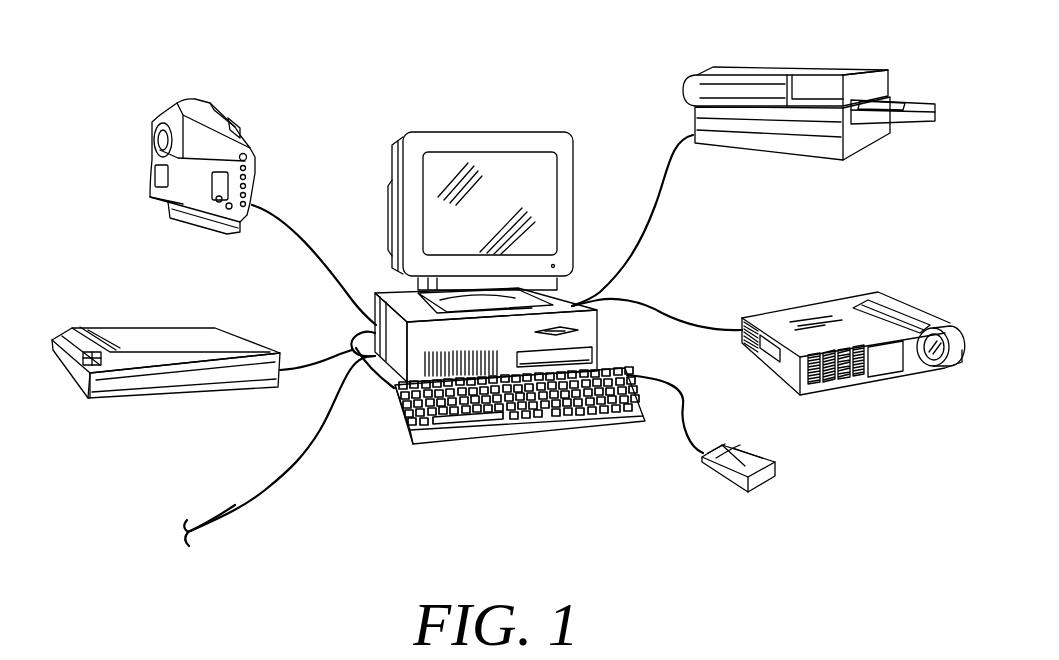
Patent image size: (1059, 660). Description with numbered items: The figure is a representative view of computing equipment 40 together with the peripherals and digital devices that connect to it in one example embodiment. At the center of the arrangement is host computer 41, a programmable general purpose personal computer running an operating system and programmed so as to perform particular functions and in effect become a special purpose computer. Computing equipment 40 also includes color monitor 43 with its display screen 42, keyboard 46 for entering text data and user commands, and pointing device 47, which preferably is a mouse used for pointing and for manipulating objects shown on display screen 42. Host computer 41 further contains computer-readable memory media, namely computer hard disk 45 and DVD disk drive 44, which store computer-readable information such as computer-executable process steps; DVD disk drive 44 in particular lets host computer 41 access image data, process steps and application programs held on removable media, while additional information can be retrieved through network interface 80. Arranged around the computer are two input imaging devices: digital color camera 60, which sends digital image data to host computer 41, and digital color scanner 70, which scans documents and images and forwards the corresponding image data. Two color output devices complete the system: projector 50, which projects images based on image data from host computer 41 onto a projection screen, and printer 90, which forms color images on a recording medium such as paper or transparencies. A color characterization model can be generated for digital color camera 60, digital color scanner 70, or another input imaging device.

The computing equipment 40 is at (553, 108).
The host computer 41 is at (386, 292).
The display screen 42 is at (540, 211).
The color monitor 43 is at (485, 132).
The DVD disk drive 44 is at (578, 330).
The computer hard disk 45 is at (592, 355).
The keyboard 46 is at (473, 428).
The pointing device 47 is at (760, 483).
The projector 50 is at (802, 293).
The digital color camera 60 is at (254, 150).
The digital color scanner 70 is at (203, 393).
The network interface 80 is at (221, 550).
The printer 90 is at (735, 61).